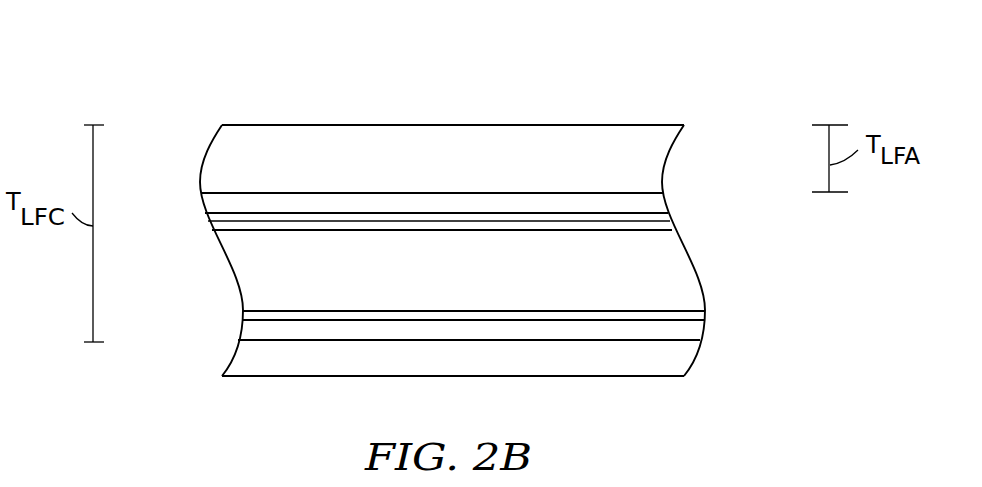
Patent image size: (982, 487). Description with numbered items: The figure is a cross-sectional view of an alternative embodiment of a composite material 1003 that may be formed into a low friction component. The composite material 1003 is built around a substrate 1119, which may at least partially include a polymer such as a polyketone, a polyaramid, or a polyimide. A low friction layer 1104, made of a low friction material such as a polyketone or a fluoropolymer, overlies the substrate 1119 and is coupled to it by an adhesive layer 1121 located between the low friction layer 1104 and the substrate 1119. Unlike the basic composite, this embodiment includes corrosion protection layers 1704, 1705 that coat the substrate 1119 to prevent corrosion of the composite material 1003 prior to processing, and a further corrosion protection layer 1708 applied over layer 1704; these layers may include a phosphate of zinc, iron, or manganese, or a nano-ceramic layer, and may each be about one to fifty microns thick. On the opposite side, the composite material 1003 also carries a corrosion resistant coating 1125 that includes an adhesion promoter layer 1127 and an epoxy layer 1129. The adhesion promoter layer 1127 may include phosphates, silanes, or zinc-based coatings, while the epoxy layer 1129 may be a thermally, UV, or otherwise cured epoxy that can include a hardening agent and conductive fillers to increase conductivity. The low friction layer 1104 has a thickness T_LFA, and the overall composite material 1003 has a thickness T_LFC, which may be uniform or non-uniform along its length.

The composite material 1003 is at (798, 74).
The low friction layer 1104 is at (205, 160).
The adhesive layer 1121 is at (203, 192).
The corrosion protection layer 1708 is at (670, 216).
The corrosion protection layer 1704 is at (670, 226).
The substrate 1119 is at (225, 256).
The corrosion protection layer 1705 is at (706, 313).
The adhesion promoter layer 1127 is at (242, 330).
The epoxy layer 1129 is at (223, 363).
The corrosion resistant coating 1125 is at (713, 320).